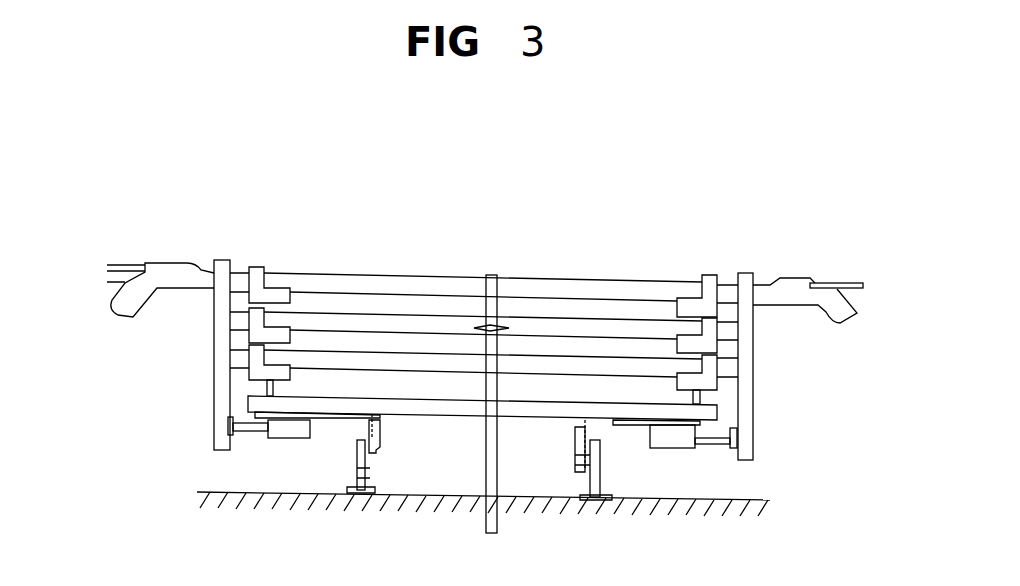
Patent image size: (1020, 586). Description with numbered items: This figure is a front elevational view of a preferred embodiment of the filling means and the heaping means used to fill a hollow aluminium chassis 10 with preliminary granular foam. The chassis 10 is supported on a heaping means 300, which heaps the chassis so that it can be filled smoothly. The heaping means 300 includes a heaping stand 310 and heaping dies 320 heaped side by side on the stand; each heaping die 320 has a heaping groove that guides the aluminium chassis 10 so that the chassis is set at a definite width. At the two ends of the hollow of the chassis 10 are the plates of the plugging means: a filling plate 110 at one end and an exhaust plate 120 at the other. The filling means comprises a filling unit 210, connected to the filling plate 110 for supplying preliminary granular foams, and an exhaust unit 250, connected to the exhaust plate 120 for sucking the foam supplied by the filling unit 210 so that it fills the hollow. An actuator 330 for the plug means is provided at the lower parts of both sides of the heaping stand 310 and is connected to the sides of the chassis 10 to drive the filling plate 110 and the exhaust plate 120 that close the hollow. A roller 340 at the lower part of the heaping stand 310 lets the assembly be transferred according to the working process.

The aluminium chassis 10 is at (398, 274).
The filling plate 110 is at (220, 252).
The exhaust plate 120 is at (750, 264).
The filling unit 210 is at (118, 314).
The exhaust unit 250 is at (847, 315).
The heaping means 300 is at (578, 237).
The heaping stand 310 is at (617, 418).
The heaping die 320 is at (700, 397).
The actuator for the plug means 330 is at (278, 440).
The roller 340 is at (373, 453).